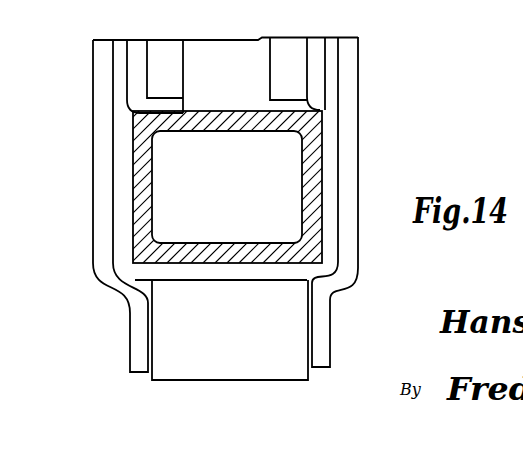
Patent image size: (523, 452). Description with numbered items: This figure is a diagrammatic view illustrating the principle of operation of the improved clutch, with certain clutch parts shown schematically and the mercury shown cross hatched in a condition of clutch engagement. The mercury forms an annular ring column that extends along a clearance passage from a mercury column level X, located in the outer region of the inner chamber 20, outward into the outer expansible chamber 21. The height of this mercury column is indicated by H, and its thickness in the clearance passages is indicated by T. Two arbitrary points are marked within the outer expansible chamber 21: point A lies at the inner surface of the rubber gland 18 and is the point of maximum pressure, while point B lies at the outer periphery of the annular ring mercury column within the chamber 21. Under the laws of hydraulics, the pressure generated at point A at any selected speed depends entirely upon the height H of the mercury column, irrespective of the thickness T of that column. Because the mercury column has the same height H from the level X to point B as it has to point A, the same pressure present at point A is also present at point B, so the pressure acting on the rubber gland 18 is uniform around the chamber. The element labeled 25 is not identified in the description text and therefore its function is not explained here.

The rubber gland 18 is at (247, 268).
The inner chamber 20 is at (211, 72).
The outer expansible chamber 21 is at (217, 253).
The bottom surface of support block 25 is at (253, 369).
The point of maximum pressure A is at (145, 268).
The arbitrary point B is at (267, 265).
The mercury column level X is at (232, 100).
The thickness of the mercury column T is at (322, 190).
The height of the mercury column H is at (47, 108).